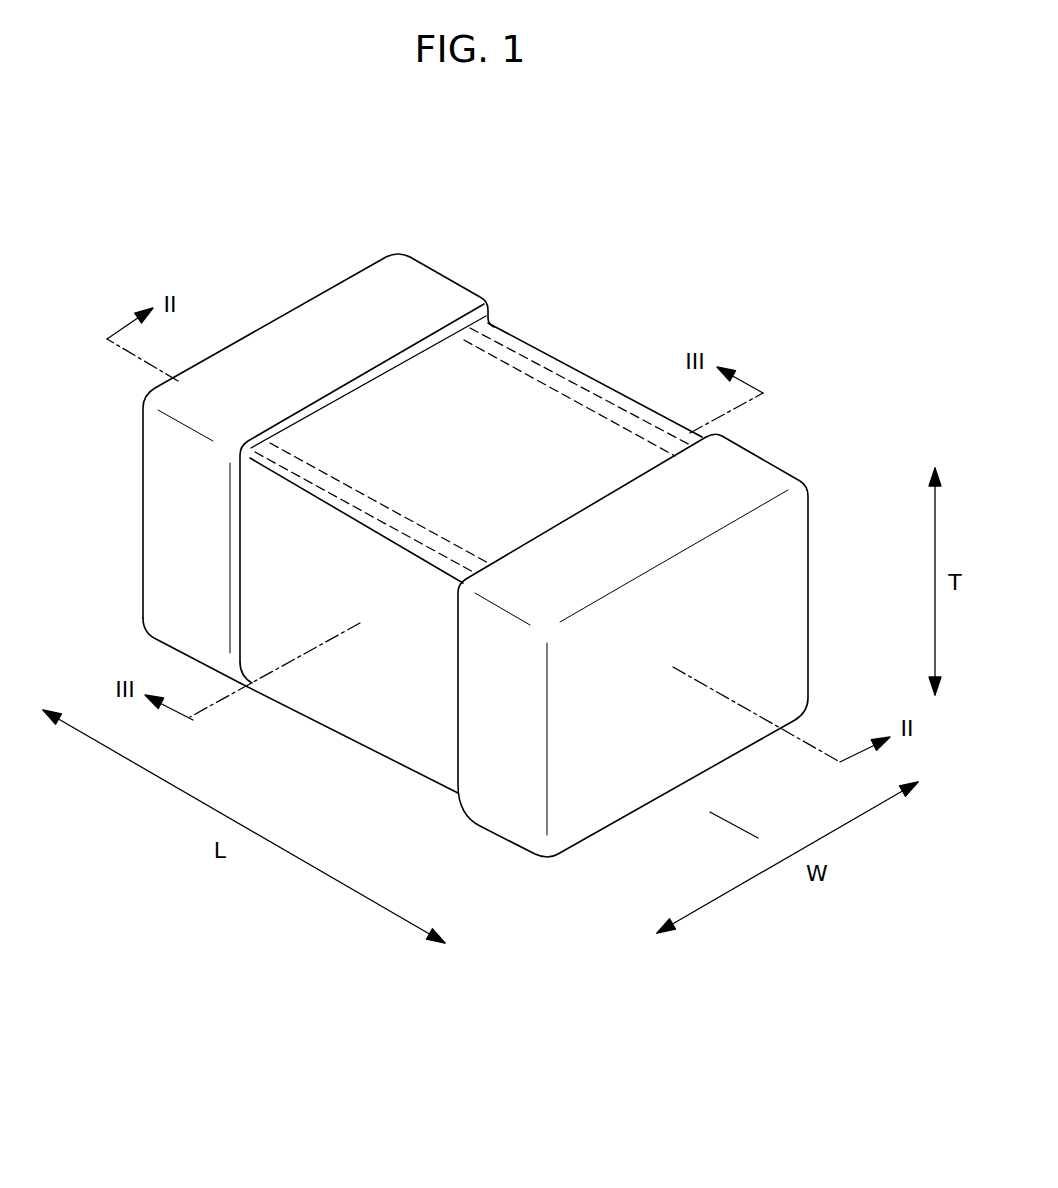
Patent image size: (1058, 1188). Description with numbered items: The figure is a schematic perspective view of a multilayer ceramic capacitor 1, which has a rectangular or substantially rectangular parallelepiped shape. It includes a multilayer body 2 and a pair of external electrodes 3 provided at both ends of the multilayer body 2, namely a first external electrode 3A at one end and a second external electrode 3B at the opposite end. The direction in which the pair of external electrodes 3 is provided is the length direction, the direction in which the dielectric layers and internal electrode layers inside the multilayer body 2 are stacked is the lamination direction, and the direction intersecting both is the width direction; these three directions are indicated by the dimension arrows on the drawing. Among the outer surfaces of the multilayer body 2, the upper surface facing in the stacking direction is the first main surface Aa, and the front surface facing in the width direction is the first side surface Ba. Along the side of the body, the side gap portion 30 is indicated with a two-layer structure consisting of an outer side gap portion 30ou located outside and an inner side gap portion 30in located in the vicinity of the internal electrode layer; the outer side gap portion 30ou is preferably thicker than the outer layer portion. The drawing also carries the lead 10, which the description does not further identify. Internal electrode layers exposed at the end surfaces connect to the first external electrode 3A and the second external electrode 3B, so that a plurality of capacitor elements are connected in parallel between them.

The multilayer ceramic capacitor 1 is at (845, 322).
The multilayer body 2 is at (472, 400).
The external electrode 3 is at (489, 526).
The first external electrode 3A is at (410, 283).
The second external electrode 3B is at (758, 473).
The laminate body 10 is at (388, 402).
The side gap portion 30 is at (552, 292).
The inner side gap portion 30in is at (550, 382).
The outer side gap portion 30ou is at (610, 397).
The first main surface Aa is at (501, 453).
The first side surface Ba is at (371, 603).